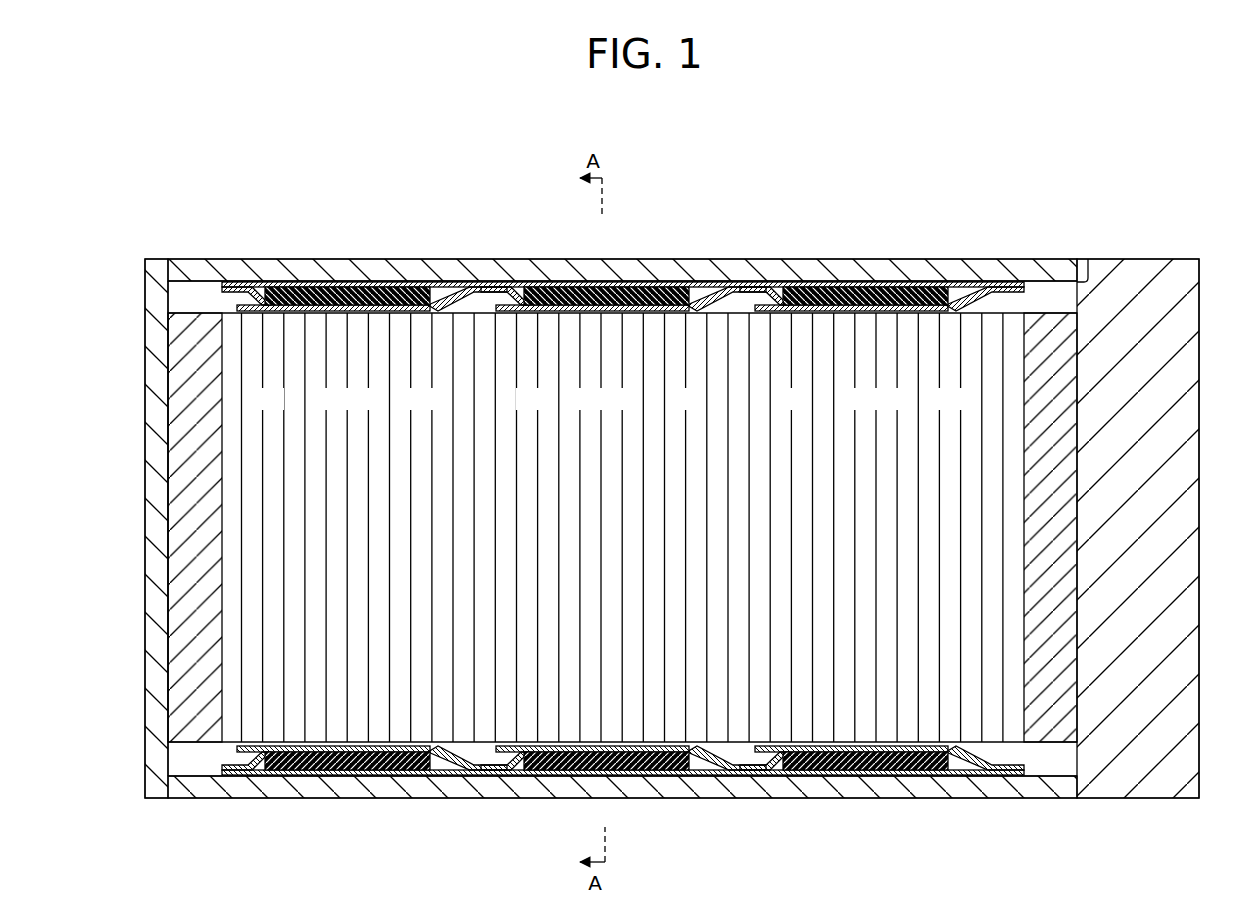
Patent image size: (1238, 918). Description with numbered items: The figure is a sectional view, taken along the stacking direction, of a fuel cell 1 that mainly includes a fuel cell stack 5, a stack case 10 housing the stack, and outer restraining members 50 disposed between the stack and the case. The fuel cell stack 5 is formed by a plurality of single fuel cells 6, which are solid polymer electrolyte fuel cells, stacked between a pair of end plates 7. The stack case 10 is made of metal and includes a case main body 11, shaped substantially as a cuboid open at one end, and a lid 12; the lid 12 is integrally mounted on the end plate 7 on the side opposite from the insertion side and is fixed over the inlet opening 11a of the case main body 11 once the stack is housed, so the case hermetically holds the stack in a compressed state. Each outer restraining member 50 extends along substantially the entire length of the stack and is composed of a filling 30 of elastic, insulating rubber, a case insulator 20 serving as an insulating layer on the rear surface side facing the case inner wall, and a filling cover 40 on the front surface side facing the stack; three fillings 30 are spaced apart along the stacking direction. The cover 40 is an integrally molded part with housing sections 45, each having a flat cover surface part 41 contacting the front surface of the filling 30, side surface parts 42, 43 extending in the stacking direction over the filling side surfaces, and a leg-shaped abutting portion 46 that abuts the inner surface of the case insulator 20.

The fuel cell 1 is at (1074, 182).
The fuel cell stack 5 is at (1003, 750).
The single fuel cell 6 is at (235, 527).
The end plate 7 is at (193, 330).
The stack case 10 is at (143, 254).
The case main body 11 is at (642, 243).
The inlet opening 11a is at (1088, 276).
The lid 12 is at (1152, 290).
The case insulator 20 is at (691, 273).
The filling 30 is at (346, 295).
The filling cover 40 is at (623, 307).
The cover surface part 41 is at (592, 357).
The side surface part 42 is at (457, 313).
The side surface part 43 is at (247, 313).
The housing section 45 is at (352, 313).
The abutting portion 46 is at (718, 348).
The outer restraining member 50 is at (257, 276).